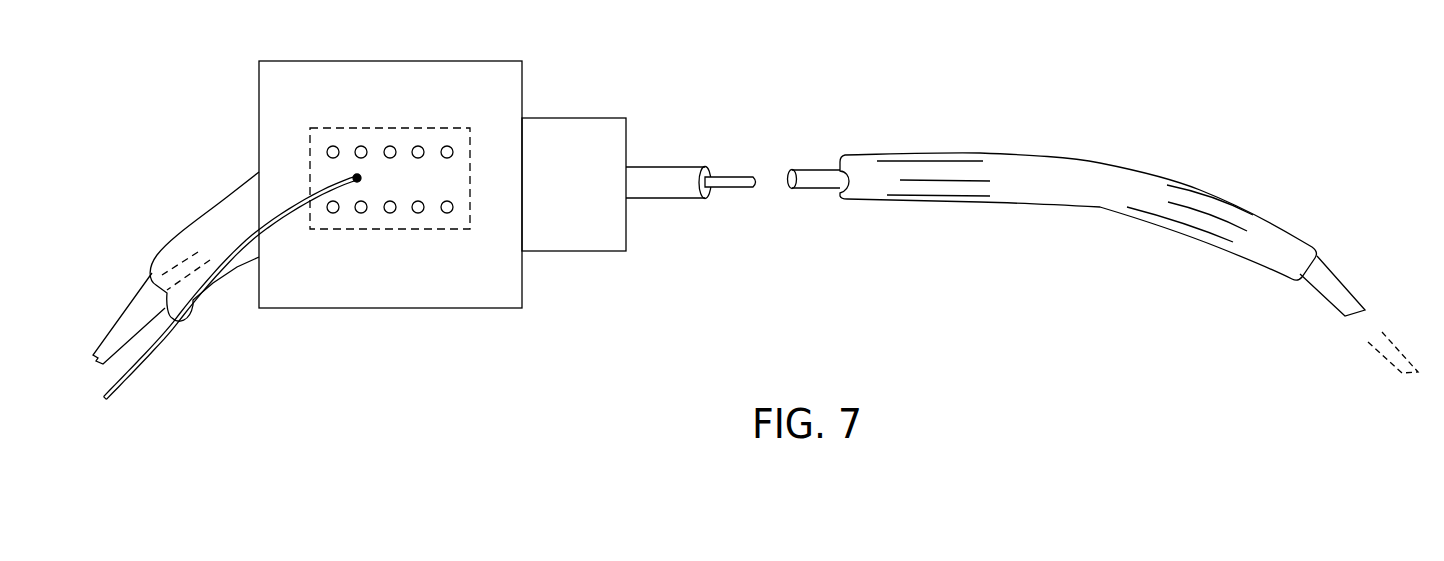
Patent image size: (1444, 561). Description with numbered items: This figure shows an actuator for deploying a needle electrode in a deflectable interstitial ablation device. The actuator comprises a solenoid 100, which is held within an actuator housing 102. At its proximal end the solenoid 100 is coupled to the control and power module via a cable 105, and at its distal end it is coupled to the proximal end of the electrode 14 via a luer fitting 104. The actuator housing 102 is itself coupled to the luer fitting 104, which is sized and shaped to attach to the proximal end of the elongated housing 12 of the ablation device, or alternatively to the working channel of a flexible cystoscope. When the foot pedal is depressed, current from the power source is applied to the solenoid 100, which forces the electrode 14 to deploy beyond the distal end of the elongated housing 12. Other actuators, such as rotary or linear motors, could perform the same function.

The elongated housing 12 is at (963, 157).
The electrode 14 is at (1340, 287).
The solenoid 100 is at (361, 213).
The actuator housing 102 is at (507, 297).
The luer fitting 104 is at (592, 238).
The cable 105 is at (142, 355).